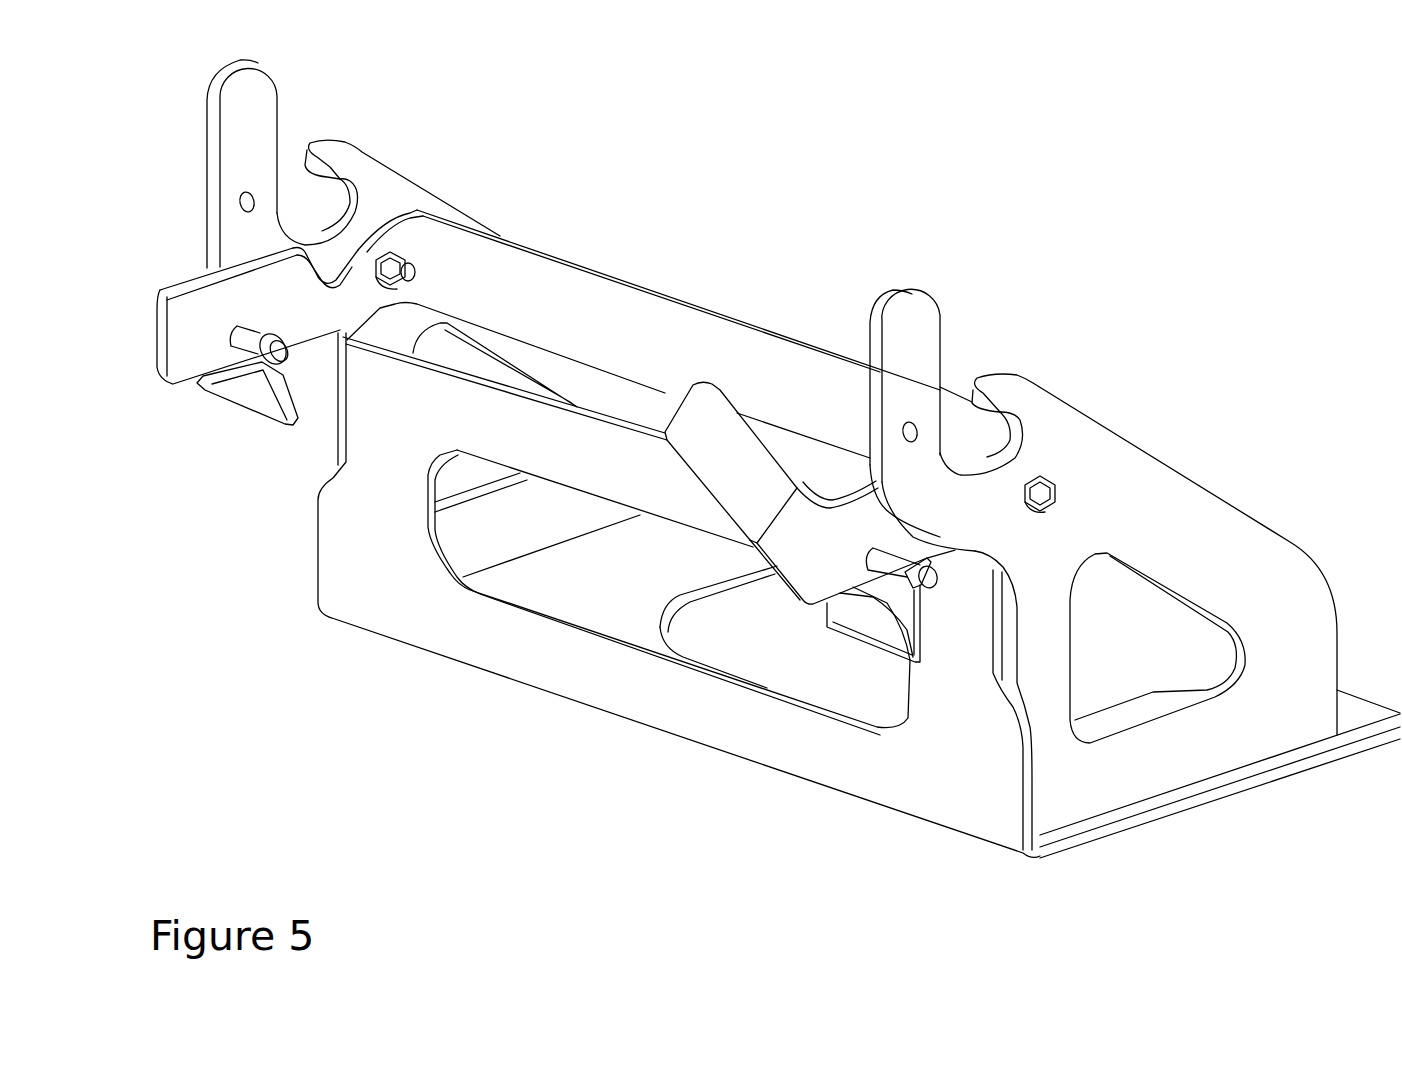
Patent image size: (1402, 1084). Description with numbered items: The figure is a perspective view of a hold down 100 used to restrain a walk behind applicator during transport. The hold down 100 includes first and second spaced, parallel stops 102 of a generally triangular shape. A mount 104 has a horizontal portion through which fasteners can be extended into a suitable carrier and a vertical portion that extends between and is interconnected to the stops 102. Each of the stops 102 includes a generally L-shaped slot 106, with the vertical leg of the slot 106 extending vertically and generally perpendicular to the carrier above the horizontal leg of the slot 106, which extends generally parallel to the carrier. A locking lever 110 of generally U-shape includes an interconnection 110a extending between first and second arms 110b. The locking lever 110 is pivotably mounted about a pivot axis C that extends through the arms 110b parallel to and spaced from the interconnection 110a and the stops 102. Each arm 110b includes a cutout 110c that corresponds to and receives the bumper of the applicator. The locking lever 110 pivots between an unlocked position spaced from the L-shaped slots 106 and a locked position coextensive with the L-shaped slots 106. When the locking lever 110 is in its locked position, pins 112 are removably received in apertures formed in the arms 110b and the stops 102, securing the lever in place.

The hold down 100 is at (1063, 263).
The stops 102 is at (430, 203).
The mount 104 is at (693, 713).
The L-shaped slots 106 is at (283, 160).
The locking lever 110 is at (720, 310).
The interconnection 110a is at (580, 283).
The arms 110b is at (215, 310).
The cutout 110c is at (330, 247).
The pins 112 is at (247, 340).
The pivot axis C is at (1053, 483).